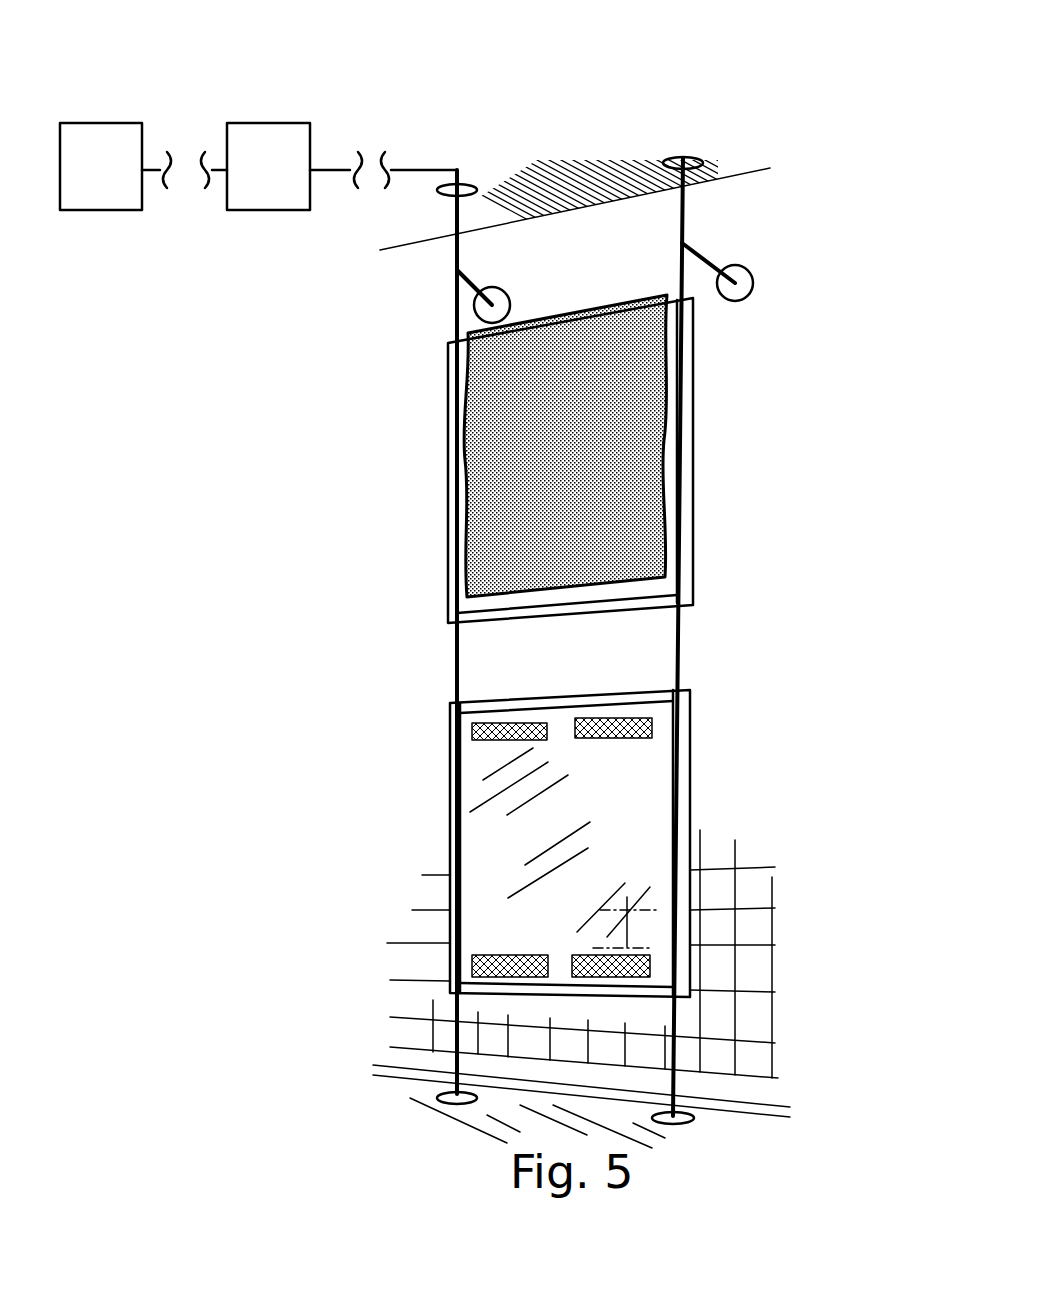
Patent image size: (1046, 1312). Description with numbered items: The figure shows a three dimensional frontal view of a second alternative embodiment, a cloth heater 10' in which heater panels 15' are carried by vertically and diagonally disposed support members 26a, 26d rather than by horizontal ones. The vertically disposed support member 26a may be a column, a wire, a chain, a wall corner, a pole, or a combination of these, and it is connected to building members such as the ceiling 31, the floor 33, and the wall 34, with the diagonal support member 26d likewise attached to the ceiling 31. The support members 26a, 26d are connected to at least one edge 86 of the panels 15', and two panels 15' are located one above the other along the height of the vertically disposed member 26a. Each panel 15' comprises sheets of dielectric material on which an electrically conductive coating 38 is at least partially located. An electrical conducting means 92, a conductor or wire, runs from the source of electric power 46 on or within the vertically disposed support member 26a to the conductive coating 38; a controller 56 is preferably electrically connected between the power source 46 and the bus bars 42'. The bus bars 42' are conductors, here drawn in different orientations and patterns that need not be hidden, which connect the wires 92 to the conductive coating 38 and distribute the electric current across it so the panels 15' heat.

The cloth heater 10' is at (783, 71).
The panel 15' is at (650, 535).
The vertically disposed support member 26a is at (456, 320).
The diagonally disposed support member 26d is at (705, 265).
The ceiling 31 is at (543, 178).
The floor 33 is at (483, 1117).
The wall 34 is at (758, 975).
The electrically conductive coating 38 is at (512, 850).
The bus bar 42' is at (562, 847).
The electrical power source 46 is at (101, 166).
The controller 56 is at (268, 166).
The edge 86 is at (448, 422).
The electrical conducting means 92 is at (424, 170).